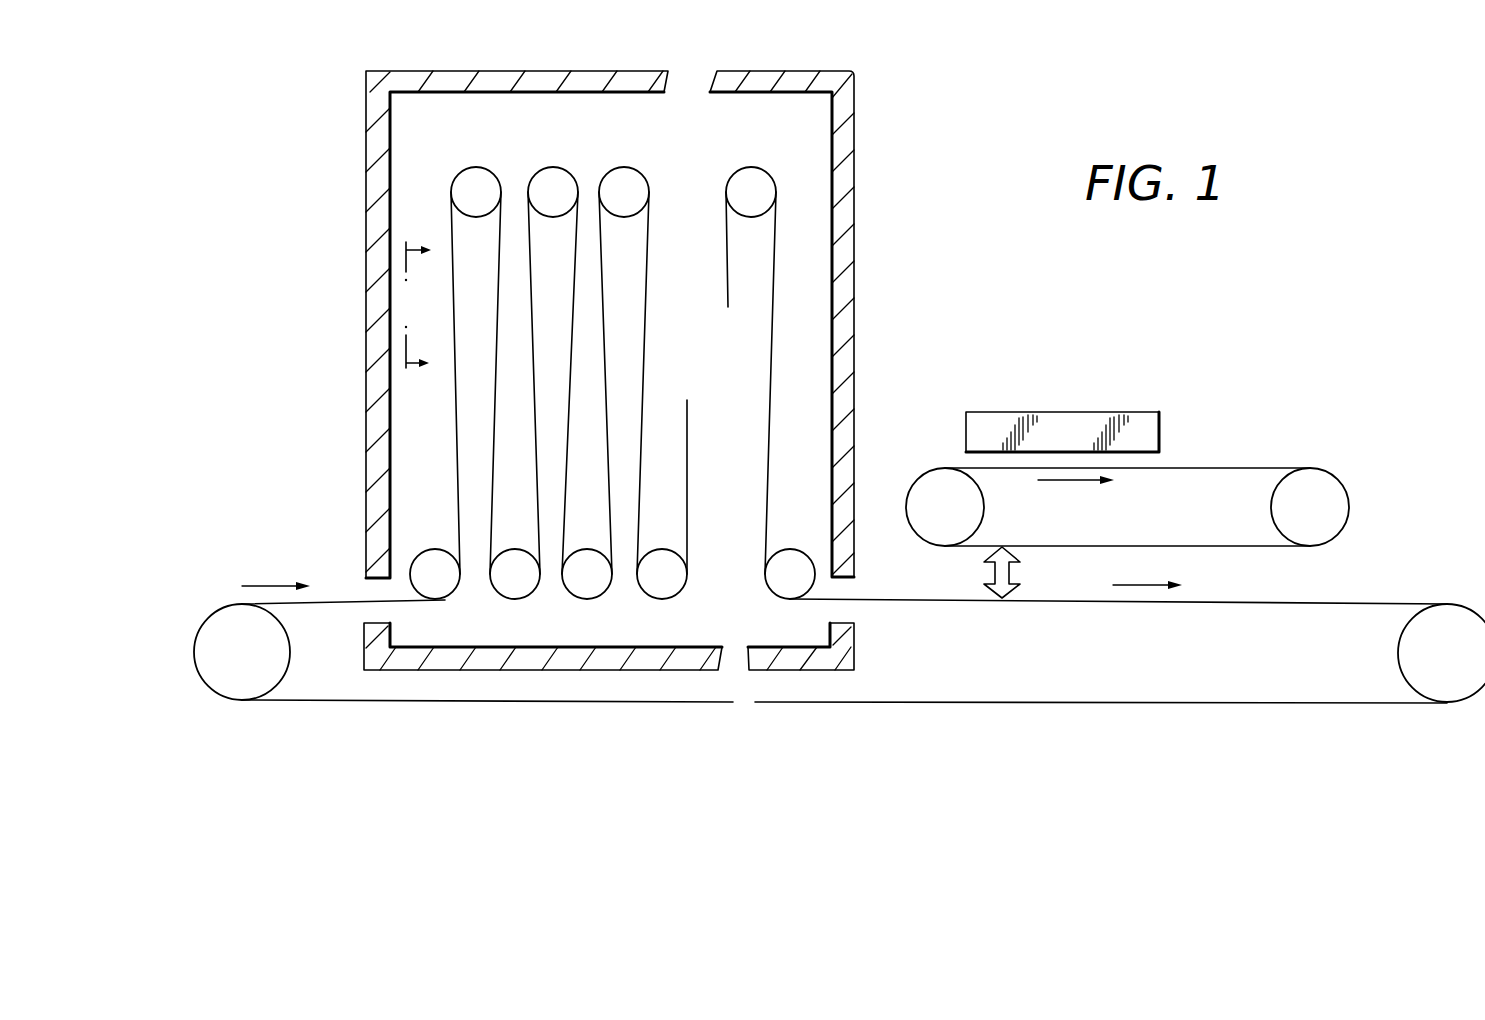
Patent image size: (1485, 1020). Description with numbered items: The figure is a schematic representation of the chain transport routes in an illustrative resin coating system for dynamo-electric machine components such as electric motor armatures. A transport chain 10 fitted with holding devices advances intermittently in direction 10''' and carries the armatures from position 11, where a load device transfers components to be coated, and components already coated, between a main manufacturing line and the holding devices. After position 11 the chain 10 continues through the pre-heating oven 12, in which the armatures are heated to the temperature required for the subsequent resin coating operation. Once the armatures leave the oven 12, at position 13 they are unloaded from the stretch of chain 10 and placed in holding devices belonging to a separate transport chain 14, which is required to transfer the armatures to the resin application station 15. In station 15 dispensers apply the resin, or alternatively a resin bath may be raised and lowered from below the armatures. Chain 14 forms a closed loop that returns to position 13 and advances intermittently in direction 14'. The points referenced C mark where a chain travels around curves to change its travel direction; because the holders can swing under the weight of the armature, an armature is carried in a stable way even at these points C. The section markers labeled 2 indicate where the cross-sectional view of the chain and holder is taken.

The transport chain 10 is at (863, 453).
The direction of advancement 10''' is at (705, 555).
The load position 11 is at (203, 600).
The pre-heating oven 12 is at (855, 155).
The unloading position 13 is at (1013, 558).
The separate transport chain 14 is at (1127, 482).
The direction of advancement of separate chain 14' is at (1076, 496).
The resin application station 15 is at (1160, 437).
The section line 2- 2 is at (426, 309).
The curve points C is at (617, 180).